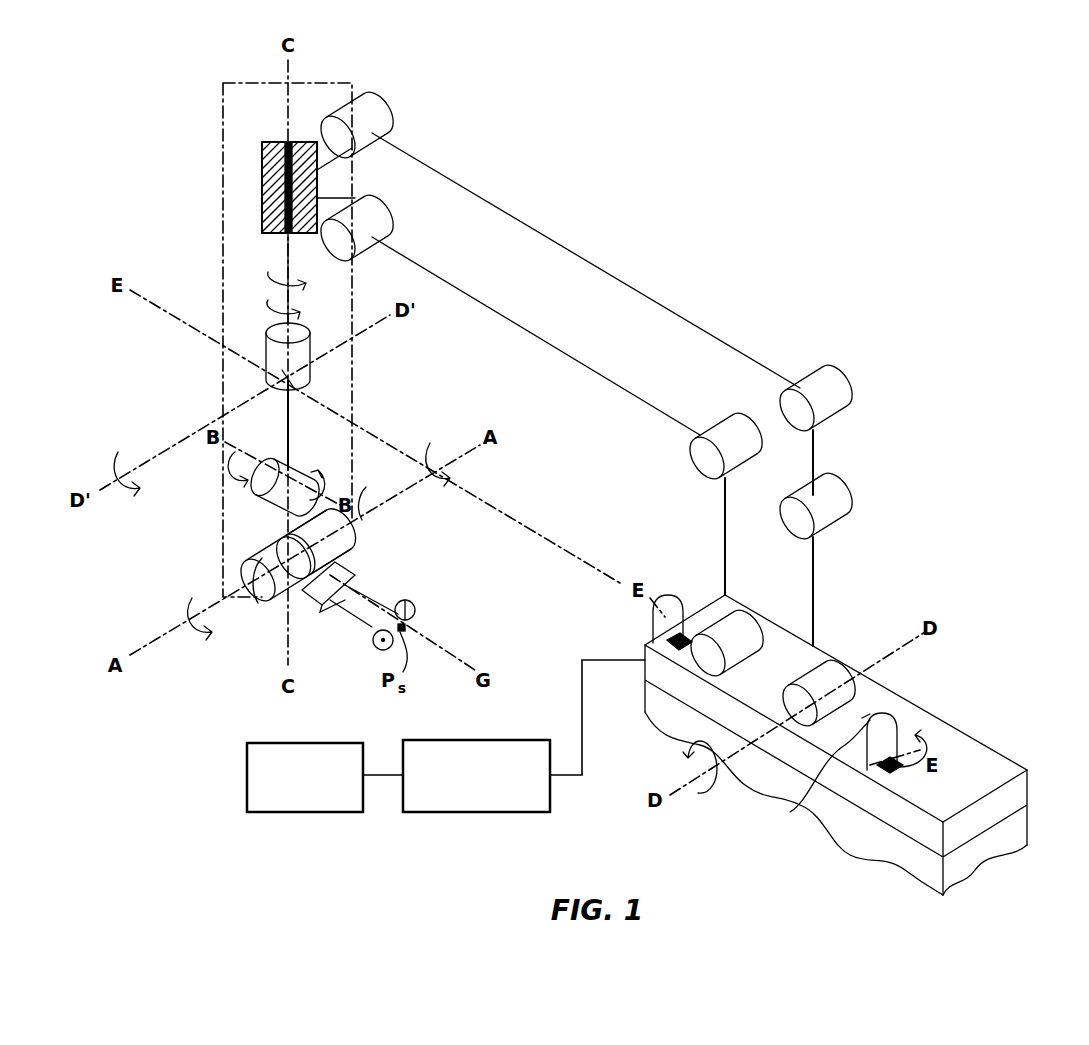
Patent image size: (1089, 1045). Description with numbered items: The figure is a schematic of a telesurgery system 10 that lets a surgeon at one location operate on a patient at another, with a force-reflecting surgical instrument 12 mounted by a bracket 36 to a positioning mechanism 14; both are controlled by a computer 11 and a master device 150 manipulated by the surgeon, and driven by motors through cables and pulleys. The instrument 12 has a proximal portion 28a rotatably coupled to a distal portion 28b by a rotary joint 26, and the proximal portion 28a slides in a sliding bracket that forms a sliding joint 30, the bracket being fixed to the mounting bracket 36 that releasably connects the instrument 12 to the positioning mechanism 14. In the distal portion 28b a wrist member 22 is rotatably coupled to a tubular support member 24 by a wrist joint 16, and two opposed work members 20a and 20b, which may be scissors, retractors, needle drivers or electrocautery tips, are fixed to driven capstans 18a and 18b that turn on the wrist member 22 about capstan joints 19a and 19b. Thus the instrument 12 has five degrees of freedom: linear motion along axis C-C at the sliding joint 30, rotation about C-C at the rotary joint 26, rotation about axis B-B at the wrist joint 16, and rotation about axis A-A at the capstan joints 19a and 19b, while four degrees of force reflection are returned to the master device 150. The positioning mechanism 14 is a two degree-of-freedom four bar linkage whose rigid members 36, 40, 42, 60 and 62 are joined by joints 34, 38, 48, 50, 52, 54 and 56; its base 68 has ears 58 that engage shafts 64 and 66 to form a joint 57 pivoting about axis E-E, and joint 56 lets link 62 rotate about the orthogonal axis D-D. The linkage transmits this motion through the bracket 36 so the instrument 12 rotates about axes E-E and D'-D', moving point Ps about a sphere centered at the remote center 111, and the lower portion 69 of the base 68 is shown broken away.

The telesurgery system 10 is at (791, 240).
The computer 11 is at (475, 812).
The force-reflecting surgical instrument 12 is at (222, 222).
The positioning mechanism 14 is at (668, 312).
The wrist joint 16 is at (335, 470).
The driven capstan 18a is at (273, 557).
The driven capstan 18b is at (355, 542).
The capstan joint 19a is at (258, 588).
The capstan joint 19b is at (360, 507).
The work member 20a is at (373, 645).
The work member 20b is at (415, 610).
The wrist member 22 is at (300, 548).
The tubular support member 24 is at (282, 380).
The rotary joint 26 is at (300, 336).
The proximal portion 28a is at (283, 263).
The distal portion 28b is at (292, 405).
The sliding joint 30 is at (281, 130).
The joint 34 is at (383, 228).
The bracket 36 is at (345, 185).
The joint 38 is at (360, 115).
The rigid member 40 is at (495, 213).
The rigid member 42 is at (601, 379).
The joint 48 is at (838, 395).
The joint 50 is at (838, 505).
The joint 52 is at (695, 465).
The joint 54 is at (740, 628).
The joint 56 is at (835, 678).
The joint 57 is at (876, 710).
The ears 58 is at (660, 615).
The rigid member 60 is at (724, 545).
The link 62 is at (815, 575).
The shaft 64 is at (836, 691).
The shaft 66 is at (790, 812).
The base 68 is at (958, 725).
The base lower portion 69 is at (1030, 825).
The remote center 111 is at (278, 368).
The master device 150 is at (303, 812).